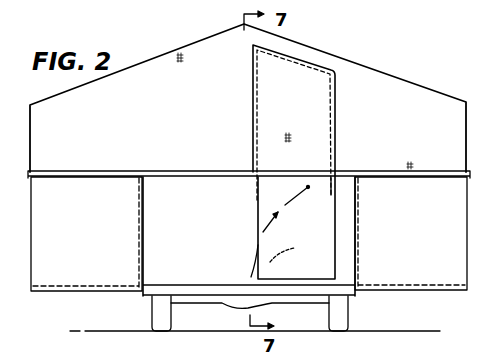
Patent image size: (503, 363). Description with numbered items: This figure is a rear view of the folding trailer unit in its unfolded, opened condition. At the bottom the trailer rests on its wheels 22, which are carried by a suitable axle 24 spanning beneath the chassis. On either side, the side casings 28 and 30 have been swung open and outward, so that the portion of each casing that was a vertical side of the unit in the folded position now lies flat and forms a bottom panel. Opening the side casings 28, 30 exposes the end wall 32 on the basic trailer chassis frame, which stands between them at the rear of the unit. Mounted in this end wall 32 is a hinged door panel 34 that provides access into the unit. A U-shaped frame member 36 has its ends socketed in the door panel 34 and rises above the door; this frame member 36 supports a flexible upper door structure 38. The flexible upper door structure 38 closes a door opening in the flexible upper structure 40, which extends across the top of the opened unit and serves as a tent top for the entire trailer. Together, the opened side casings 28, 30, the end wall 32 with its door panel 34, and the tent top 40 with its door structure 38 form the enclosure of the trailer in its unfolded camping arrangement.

The wheels 22 is at (156, 321).
The axle 24 is at (229, 303).
The side casing 28 is at (447, 277).
The side casing 30 is at (73, 281).
The end wall 32 is at (180, 192).
The hinged door panel 34 is at (272, 200).
The U-shaped frame member 36 is at (328, 197).
The flexible upper door structure 38 is at (330, 92).
The flexible upper structure 40 is at (400, 92).